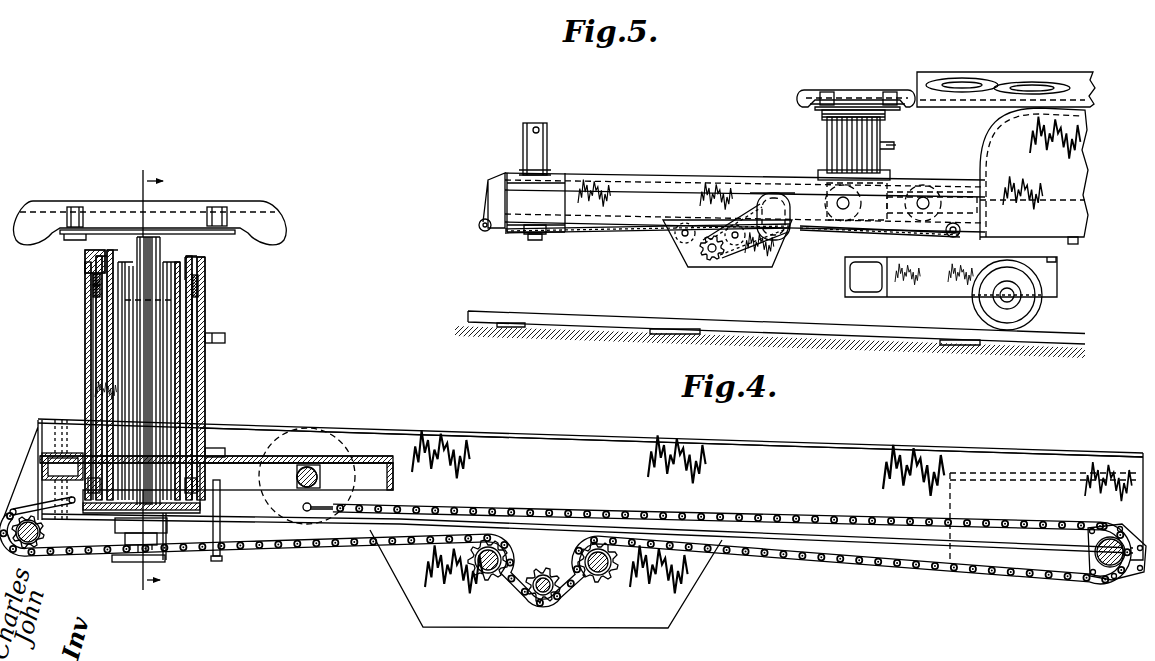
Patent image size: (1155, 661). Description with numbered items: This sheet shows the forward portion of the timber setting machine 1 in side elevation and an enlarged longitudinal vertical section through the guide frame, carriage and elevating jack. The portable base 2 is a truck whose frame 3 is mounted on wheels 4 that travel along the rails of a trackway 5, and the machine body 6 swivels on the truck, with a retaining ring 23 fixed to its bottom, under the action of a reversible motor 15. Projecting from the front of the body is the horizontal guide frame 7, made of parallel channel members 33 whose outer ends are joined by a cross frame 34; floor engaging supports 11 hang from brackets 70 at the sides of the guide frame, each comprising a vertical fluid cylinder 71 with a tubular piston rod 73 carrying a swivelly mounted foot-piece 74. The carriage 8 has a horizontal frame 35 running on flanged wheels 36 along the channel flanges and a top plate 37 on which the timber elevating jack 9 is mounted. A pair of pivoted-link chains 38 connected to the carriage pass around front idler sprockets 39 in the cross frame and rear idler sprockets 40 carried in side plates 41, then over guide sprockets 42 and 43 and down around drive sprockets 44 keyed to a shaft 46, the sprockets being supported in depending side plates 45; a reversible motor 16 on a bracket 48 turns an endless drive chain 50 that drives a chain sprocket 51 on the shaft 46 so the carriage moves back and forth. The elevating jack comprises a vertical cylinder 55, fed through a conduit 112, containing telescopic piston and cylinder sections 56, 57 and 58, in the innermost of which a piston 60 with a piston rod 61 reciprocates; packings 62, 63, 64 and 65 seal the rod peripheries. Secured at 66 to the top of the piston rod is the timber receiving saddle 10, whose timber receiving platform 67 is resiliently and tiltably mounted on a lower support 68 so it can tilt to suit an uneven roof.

In FIG. 5, the timber setting machine 1 is at (993, 125).
In FIG. 5, the portable base 2 is at (940, 297).
In FIG. 5, the frame 3 is at (973, 309).
In FIG. 5, the wheels 4 is at (1025, 315).
In FIG. 5, the trackway 5 is at (565, 313).
In FIG. 5, the machine body 6 is at (1050, 115).
In FIG. 5, the guide frame 7 is at (670, 178).
In FIG. 4, the guide frame 7 is at (597, 437).
In FIG. 5, the carriage 8 is at (966, 198).
In FIG. 4, the carriage 8 is at (248, 455).
In FIG. 5, the timber elevating jack 9 is at (828, 145).
In FIG. 4, the timber elevating jack 9 is at (85, 330).
In FIG. 5, the timber receiving saddle 10 is at (810, 94).
In FIG. 4, the timber receiving saddle 10 is at (238, 206).
In FIG. 5, the floor engaging supports 11 is at (548, 158).
In FIG. 4, the floor engaging supports 11 is at (163, 522).
In FIG. 5, the reversible motor 15 is at (1048, 259).
In FIG. 5, the reversible motor 16 is at (780, 238).
In FIG. 5, the retaining ring 23 is at (1070, 238).
In FIG. 5, the channel members 33 is at (714, 180).
In FIG. 4, the channel members 33 is at (530, 433).
In FIG. 5, the cross frame 34 is at (490, 192).
In FIG. 4, the cross frame 34 is at (35, 447).
In FIG. 4, the horizontal frame 35 is at (395, 470).
In FIG. 5, the flanged wheels 36 is at (935, 190).
In FIG. 4, the flanged wheels 36 is at (345, 440).
In FIG. 5, the top plate 37 is at (893, 200).
In FIG. 4, the top plate 37 is at (306, 466).
In FIG. 5, the pivoted-link chains 38 is at (613, 236).
In FIG. 4, the pivoted-link chains 38 is at (760, 512).
In FIG. 5, the front idler sprockets 39 is at (479, 226).
In FIG. 4, the front idler sprockets 39 is at (46, 534).
In FIG. 5, the rear idler sprockets 40 is at (951, 237).
In FIG. 4, the rear idler sprockets 40 is at (1092, 578).
In FIG. 4, the side plates 41 is at (1045, 572).
In FIG. 5, the guide sprocket 42 is at (675, 240).
In FIG. 4, the guide sprocket 42 is at (480, 580).
In FIG. 5, the guide sprocket 43 is at (745, 265).
In FIG. 4, the guide sprocket 43 is at (609, 583).
In FIG. 4, the drive sprockets 44 is at (545, 595).
In FIG. 5, the depending side plates 45 is at (735, 268).
In FIG. 4, the depending side plates 45 is at (503, 627).
In FIG. 5, the shaft 46 is at (706, 258).
In FIG. 4, the shaft 46 is at (560, 590).
In FIG. 5, the bracket 48 is at (768, 195).
In FIG. 5, the endless drive chain 50 is at (730, 218).
In FIG. 5, the chain sprocket 51 is at (722, 230).
In FIG. 5, the vertical cylinder 55 is at (893, 143).
In FIG. 4, the vertical cylinder 55 is at (200, 362).
In FIG. 4, the piston and cylinder section 56 is at (190, 331).
In FIG. 4, the piston and cylinder section 57 is at (178, 321).
In FIG. 4, the inner section 58 is at (170, 383).
In FIG. 4, the piston 60 is at (205, 500).
In FIG. 4, the piston rod 61 is at (150, 393).
In FIG. 4, the packing 62 is at (198, 292).
In FIG. 4, the packing 63 is at (200, 280).
In FIG. 4, the packing 64 is at (93, 287).
In FIG. 4, the packing 65 is at (93, 274).
In FIG. 5, the securing point 66 is at (838, 112).
In FIG. 4, the securing point 66 is at (170, 234).
In FIG. 5, the timber receiving platform 67 is at (858, 100).
In FIG. 4, the timber receiving platform 67 is at (197, 203).
In FIG. 5, the lower support 68 is at (816, 108).
In FIG. 4, the lower support 68 is at (82, 237).
In FIG. 5, the brackets 70 is at (520, 172).
In FIG. 5, the vertical fluid cylinder 71 is at (551, 168).
In FIG. 5, the tubular piston rod 73 is at (542, 236).
In FIG. 4, the tubular piston rod 73 is at (155, 540).
In FIG. 5, the foot-piece 74 is at (533, 238).
In FIG. 4, the foot-piece 74 is at (118, 560).
In FIG. 5, the conduit 112 is at (896, 147).
In FIG. 4, the conduit 112 is at (225, 338).